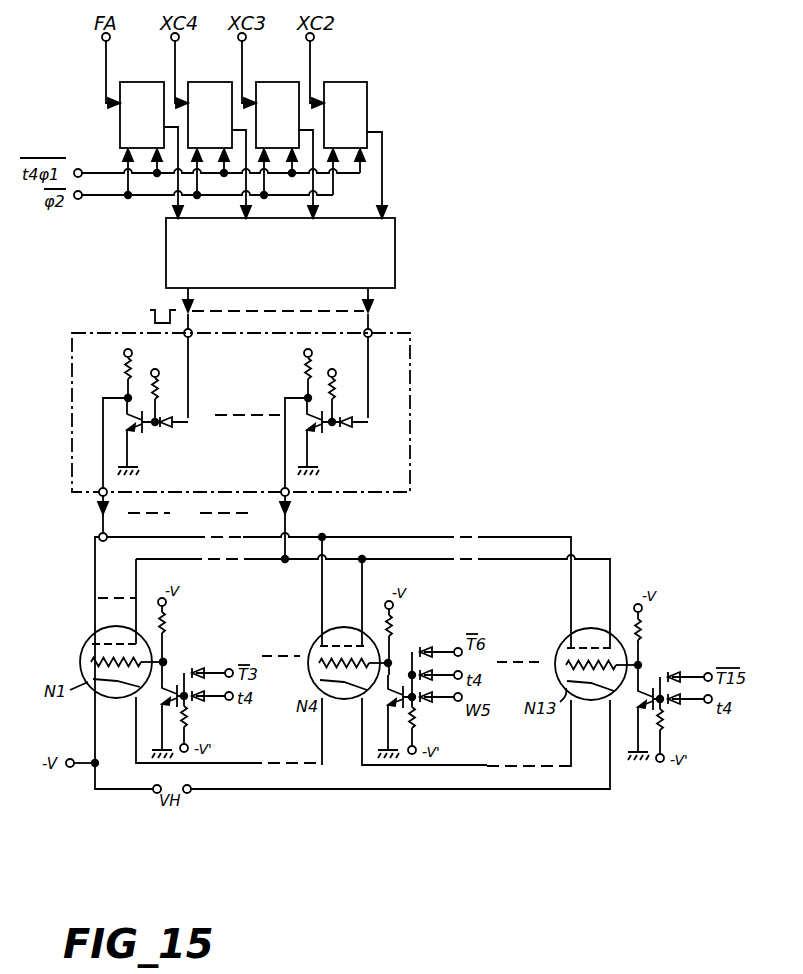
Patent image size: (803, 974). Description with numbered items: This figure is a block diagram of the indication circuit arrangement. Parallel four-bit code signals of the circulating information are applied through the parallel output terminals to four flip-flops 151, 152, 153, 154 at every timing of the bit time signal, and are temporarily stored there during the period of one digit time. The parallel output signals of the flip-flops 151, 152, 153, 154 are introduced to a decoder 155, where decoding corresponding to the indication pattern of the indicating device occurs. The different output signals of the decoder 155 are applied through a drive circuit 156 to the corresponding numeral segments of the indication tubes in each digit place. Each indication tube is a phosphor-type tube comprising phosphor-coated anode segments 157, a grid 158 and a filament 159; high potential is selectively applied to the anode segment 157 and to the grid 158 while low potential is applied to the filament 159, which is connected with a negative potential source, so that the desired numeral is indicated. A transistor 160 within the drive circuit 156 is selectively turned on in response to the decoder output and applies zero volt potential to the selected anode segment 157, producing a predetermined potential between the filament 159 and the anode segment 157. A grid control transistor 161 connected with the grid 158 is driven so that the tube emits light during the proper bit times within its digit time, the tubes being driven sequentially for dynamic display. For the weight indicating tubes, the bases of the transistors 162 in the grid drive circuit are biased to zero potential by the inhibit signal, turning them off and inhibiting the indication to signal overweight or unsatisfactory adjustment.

The flip-flop 151 is at (162, 82).
The flip-flop 152 is at (230, 82).
The flip-flop 153 is at (298, 82).
The flip-flop 154 is at (366, 82).
The decoder 155 is at (395, 233).
The drive circuit 156 is at (410, 369).
The anode segment 157 is at (100, 642).
The grid 158 is at (88, 662).
The filament 159 is at (119, 693).
The transistor 160 is at (147, 441).
The grid control transistor 161 is at (172, 682).
The transistor 162 is at (395, 703).